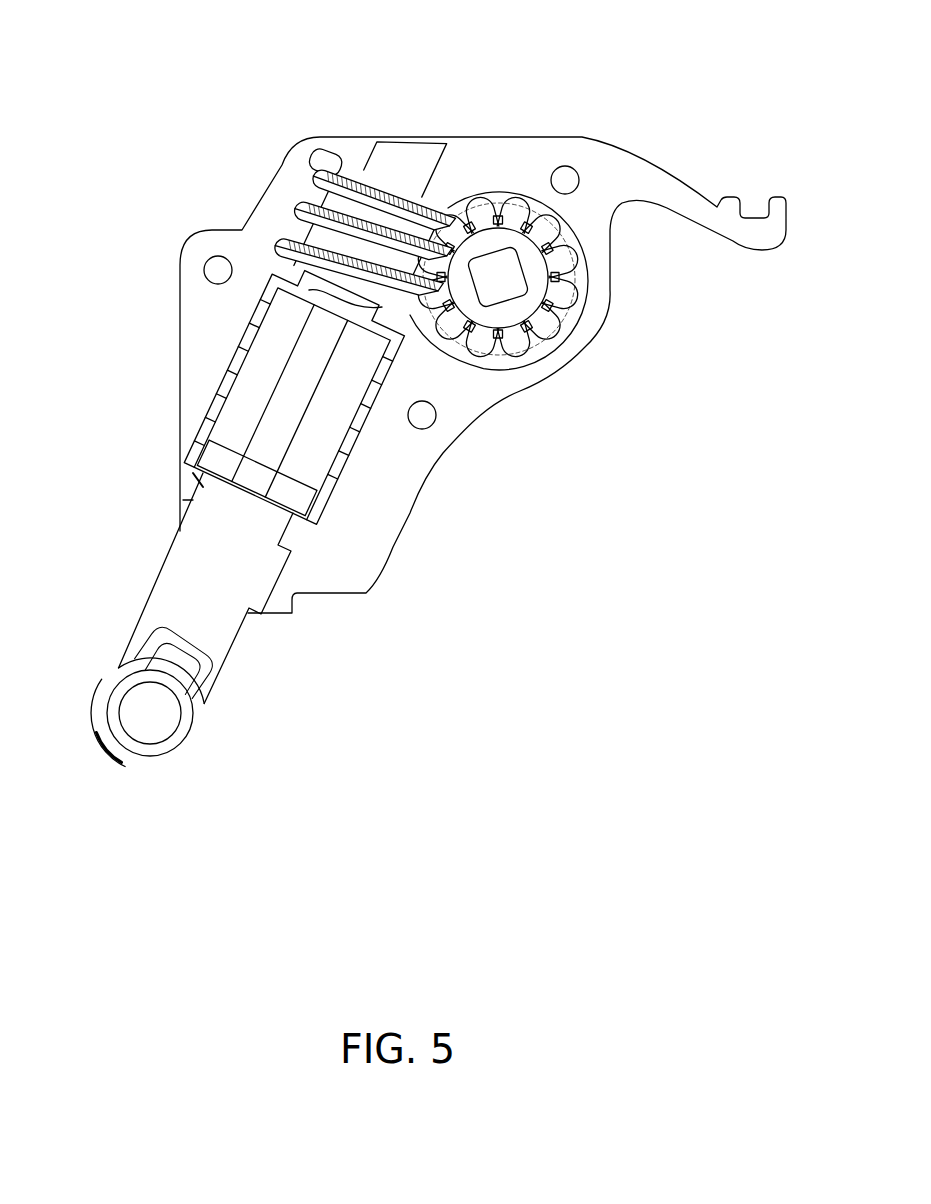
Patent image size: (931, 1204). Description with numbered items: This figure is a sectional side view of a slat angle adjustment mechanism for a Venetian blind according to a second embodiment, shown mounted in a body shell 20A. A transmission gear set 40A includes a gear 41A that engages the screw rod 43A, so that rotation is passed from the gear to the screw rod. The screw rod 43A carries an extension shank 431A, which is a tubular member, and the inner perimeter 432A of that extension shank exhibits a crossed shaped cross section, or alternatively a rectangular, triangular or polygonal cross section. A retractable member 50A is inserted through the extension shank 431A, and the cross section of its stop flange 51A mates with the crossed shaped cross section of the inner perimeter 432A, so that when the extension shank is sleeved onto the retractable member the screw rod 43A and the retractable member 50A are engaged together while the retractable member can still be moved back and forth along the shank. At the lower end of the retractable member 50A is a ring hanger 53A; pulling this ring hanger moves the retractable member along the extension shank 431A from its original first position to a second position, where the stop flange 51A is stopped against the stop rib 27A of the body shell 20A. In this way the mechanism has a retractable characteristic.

The body shell 20A is at (581, 136).
The transmission gear set 40A is at (537, 48).
The gear 41A is at (514, 205).
The screw rod 43A is at (381, 186).
The extension shank 431A is at (243, 337).
The inner perimeter 432A is at (293, 342).
The stop rib 27A is at (190, 468).
The stop flange 51A is at (250, 487).
The retractable member 50A is at (240, 633).
The ring hanger 53A is at (180, 752).